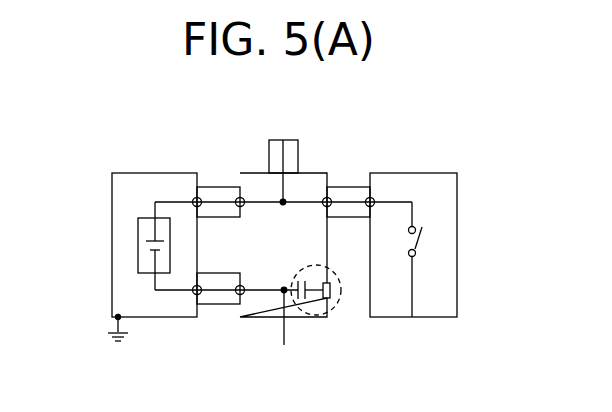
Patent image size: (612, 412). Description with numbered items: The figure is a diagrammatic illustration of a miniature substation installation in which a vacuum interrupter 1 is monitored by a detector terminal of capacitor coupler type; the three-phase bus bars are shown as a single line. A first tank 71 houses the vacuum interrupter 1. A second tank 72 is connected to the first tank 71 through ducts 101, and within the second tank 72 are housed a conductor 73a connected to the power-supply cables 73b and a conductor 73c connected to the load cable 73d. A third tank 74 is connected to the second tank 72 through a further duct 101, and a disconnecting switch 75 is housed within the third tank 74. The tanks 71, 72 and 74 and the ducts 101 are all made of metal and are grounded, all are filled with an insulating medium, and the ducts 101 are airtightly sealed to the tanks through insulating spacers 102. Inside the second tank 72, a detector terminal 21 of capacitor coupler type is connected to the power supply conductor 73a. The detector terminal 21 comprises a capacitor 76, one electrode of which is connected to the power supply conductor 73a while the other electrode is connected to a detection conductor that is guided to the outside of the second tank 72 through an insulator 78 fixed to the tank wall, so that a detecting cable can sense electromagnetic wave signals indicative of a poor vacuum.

The vacuum interrupter 1 is at (138, 249).
The first tank 71 is at (112, 206).
The second tank 72 is at (243, 173).
The conductor 73a is at (262, 289).
The power-supply cables 73b is at (283, 335).
The conductor 73c is at (258, 203).
The load cable 73d is at (288, 147).
The third tank 74 is at (457, 203).
The disconnecting switch 75 is at (420, 240).
The capacitor 76 is at (302, 300).
The insulator 78 is at (328, 283).
The detector terminal 21 is at (338, 306).
The ducts 101 is at (210, 186).
The insulating spacers 102 is at (197, 199).